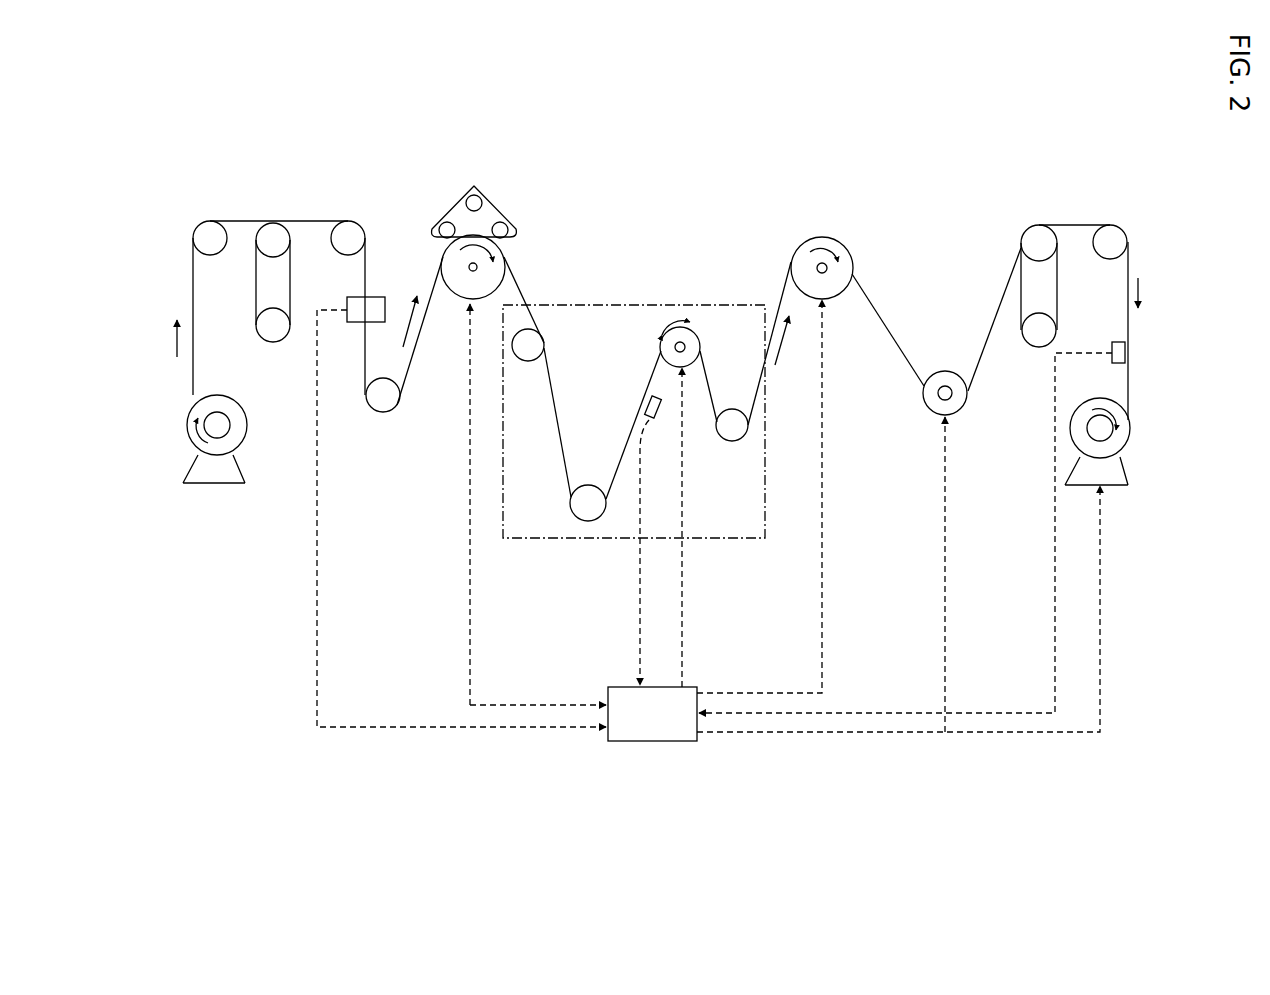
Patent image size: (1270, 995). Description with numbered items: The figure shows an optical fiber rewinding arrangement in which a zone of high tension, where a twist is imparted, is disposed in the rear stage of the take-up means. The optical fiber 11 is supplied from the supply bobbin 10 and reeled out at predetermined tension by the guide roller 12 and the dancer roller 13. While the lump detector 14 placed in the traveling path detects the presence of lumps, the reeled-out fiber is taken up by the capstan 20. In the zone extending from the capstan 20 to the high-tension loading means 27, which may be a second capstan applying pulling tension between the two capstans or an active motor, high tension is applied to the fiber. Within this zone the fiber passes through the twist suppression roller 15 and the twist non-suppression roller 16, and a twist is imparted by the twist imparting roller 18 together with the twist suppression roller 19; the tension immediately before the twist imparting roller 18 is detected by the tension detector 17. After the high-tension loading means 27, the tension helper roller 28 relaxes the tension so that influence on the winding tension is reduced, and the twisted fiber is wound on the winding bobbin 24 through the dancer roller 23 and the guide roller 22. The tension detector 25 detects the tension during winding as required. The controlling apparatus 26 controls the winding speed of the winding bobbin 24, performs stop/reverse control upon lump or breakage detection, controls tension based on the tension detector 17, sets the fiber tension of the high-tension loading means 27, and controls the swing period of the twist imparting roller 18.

The supply bobbin 10 is at (228, 405).
The optical fiber 11 is at (193, 300).
The guide roller 12 is at (208, 230).
The dancer roller 13 is at (268, 325).
The lump detector 14 is at (356, 298).
The twist suppression roller 15 is at (535, 343).
The twist non-suppression roller 16 is at (586, 505).
The tension detector 17 is at (646, 405).
The twist imparting roller 18 is at (690, 347).
The twist suppression roller 19 is at (731, 436).
The capstan 20 is at (452, 264).
The guide roller 22 is at (1107, 232).
The dancer roller 23 is at (1048, 246).
The winding bobbin 24 is at (1112, 478).
The tension detector 25 is at (1115, 344).
The controlling apparatus 26 is at (645, 736).
The high-tension loading means 27 is at (802, 263).
The tension helper roller 28 is at (940, 378).